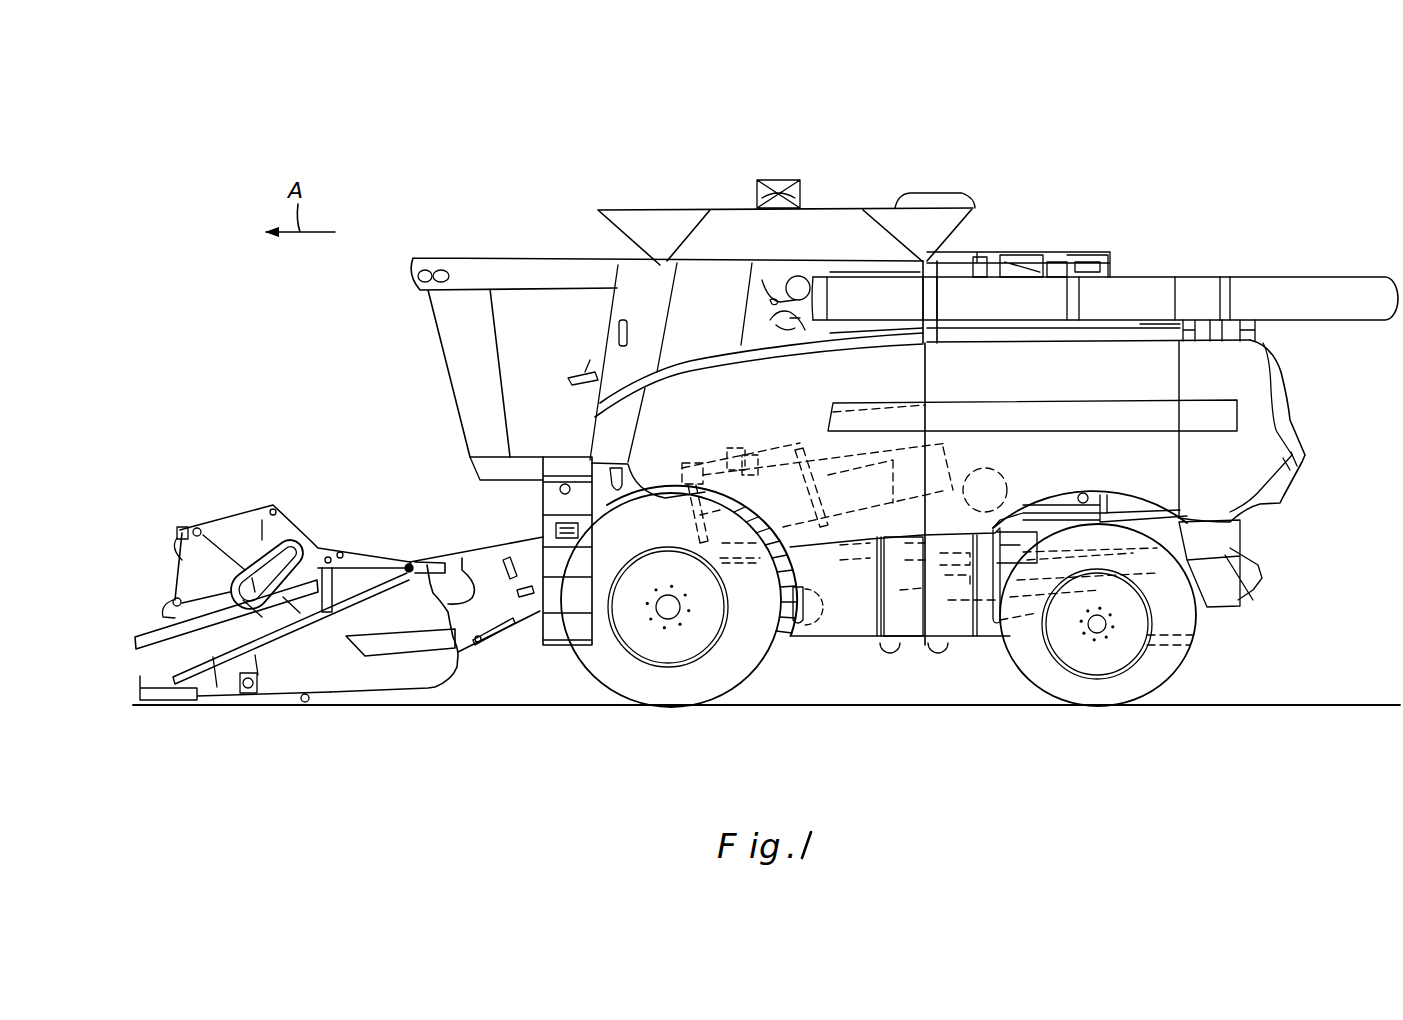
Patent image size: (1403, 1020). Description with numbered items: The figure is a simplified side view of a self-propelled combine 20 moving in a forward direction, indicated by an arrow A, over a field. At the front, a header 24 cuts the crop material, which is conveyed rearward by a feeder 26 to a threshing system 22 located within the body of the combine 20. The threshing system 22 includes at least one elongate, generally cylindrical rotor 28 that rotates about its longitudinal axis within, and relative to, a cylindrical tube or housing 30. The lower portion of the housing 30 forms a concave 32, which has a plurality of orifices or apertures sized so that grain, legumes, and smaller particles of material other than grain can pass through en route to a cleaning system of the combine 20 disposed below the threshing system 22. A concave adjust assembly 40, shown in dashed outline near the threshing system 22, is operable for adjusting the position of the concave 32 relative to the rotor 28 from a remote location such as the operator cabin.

The self-propelled combine 20 is at (1221, 175).
The threshing system 22 is at (803, 437).
The header 24 is at (327, 538).
The feeder 26 is at (447, 558).
The rotor 28 is at (944, 421).
The housing 30 is at (705, 455).
The concave 32 is at (745, 540).
The concave adjust assembly 40 is at (735, 453).